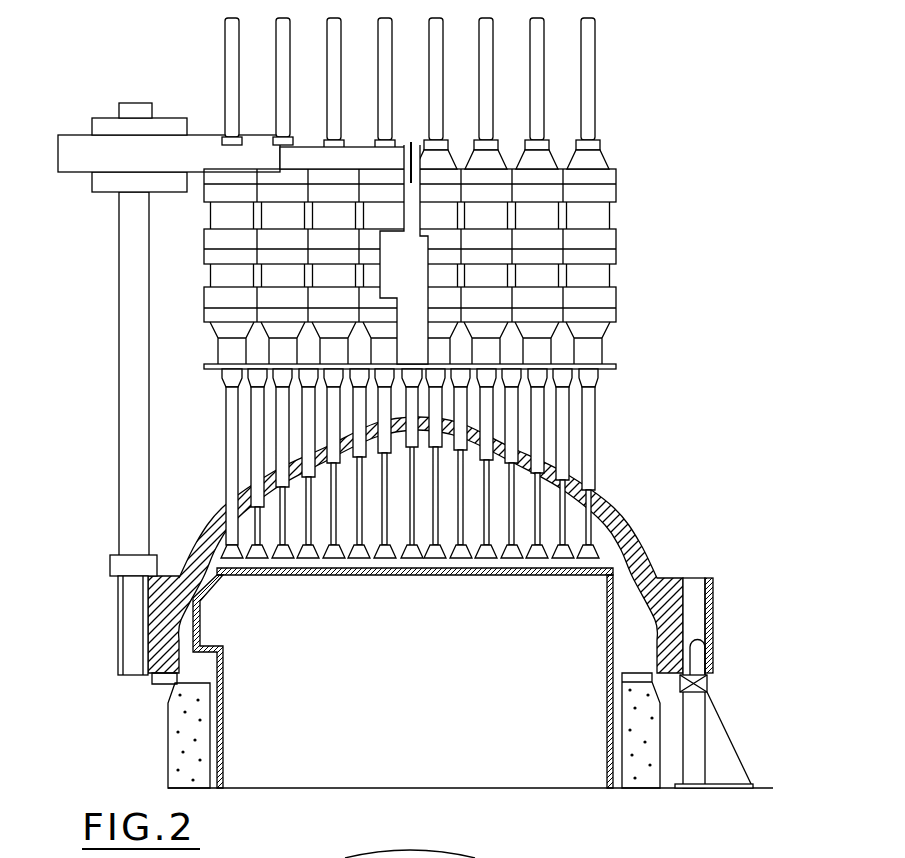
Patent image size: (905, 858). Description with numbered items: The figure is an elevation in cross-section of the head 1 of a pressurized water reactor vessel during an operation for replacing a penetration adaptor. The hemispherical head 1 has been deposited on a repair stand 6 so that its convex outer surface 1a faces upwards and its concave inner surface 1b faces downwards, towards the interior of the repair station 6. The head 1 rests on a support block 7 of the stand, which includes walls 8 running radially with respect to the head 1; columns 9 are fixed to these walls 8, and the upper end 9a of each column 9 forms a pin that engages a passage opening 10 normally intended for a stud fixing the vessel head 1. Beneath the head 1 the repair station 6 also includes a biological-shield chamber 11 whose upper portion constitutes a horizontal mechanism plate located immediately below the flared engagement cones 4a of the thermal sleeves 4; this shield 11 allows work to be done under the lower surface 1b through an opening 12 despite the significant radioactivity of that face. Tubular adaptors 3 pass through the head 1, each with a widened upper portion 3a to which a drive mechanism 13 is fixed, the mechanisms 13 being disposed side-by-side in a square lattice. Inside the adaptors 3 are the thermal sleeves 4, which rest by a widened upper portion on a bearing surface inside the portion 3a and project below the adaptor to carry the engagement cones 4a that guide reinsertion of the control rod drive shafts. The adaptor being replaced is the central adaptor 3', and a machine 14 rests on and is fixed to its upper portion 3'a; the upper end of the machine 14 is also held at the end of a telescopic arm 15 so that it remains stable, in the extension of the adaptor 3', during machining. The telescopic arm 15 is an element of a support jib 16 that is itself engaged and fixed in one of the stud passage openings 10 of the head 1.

The head 1 is at (444, 602).
The convex outer surface 1a is at (637, 535).
The concave inner surface 1b is at (623, 567).
The adaptor 3 is at (460, 272).
The central adaptor 3' is at (400, 530).
The widened upper portion of adaptor 3a is at (593, 375).
The upper portion of central adaptor 3'a is at (293, 388).
The thermal sleeve 4 is at (567, 515).
The flared engagement cone 4a is at (227, 552).
The repair stand 6 is at (137, 737).
The support block 7 is at (645, 725).
The walls 8 is at (723, 763).
The column 9 is at (707, 685).
The upper end of column 9a is at (697, 660).
The passage opening 10 is at (133, 625).
The biological-shield chamber 11 is at (318, 578).
The opening 12 is at (437, 578).
The mechanisms 13 is at (587, 292).
The machine 14 is at (407, 257).
The telescopic arm 15 is at (350, 160).
The support jib 16 is at (100, 412).